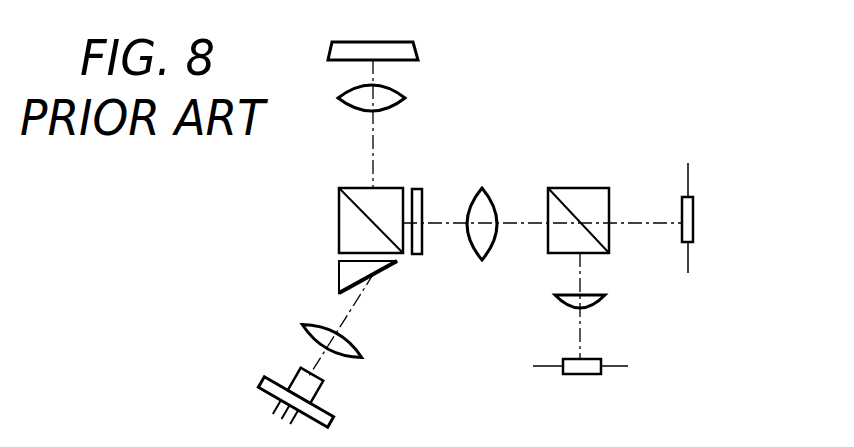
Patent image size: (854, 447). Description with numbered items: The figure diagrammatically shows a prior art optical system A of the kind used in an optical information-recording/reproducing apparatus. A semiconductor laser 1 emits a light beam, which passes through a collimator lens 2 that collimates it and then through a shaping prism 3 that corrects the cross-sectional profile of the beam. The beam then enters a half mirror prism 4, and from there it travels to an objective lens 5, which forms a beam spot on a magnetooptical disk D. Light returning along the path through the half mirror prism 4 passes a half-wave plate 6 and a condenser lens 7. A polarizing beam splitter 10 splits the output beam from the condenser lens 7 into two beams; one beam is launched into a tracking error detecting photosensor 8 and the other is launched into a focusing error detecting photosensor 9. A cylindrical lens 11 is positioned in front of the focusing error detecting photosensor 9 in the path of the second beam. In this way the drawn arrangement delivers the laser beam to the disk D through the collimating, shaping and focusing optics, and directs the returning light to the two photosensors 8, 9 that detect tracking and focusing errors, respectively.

The semiconductor laser 1 is at (315, 395).
The collimator lens 2 is at (352, 347).
The shaping prism 3 is at (350, 272).
The half mirror prism 4 is at (352, 236).
The objective lens 5 is at (400, 97).
The half-wave plate 6 is at (419, 190).
The condenser lens 7 is at (486, 200).
The tracking error detecting photosensor 8 is at (688, 210).
The focusing error detecting photosensor 9 is at (598, 362).
The polarizing beam splitter 10 is at (585, 200).
The cylindrical lens 11 is at (603, 300).
The optical system A is at (330, 176).
The magnetooptical disk D is at (397, 52).